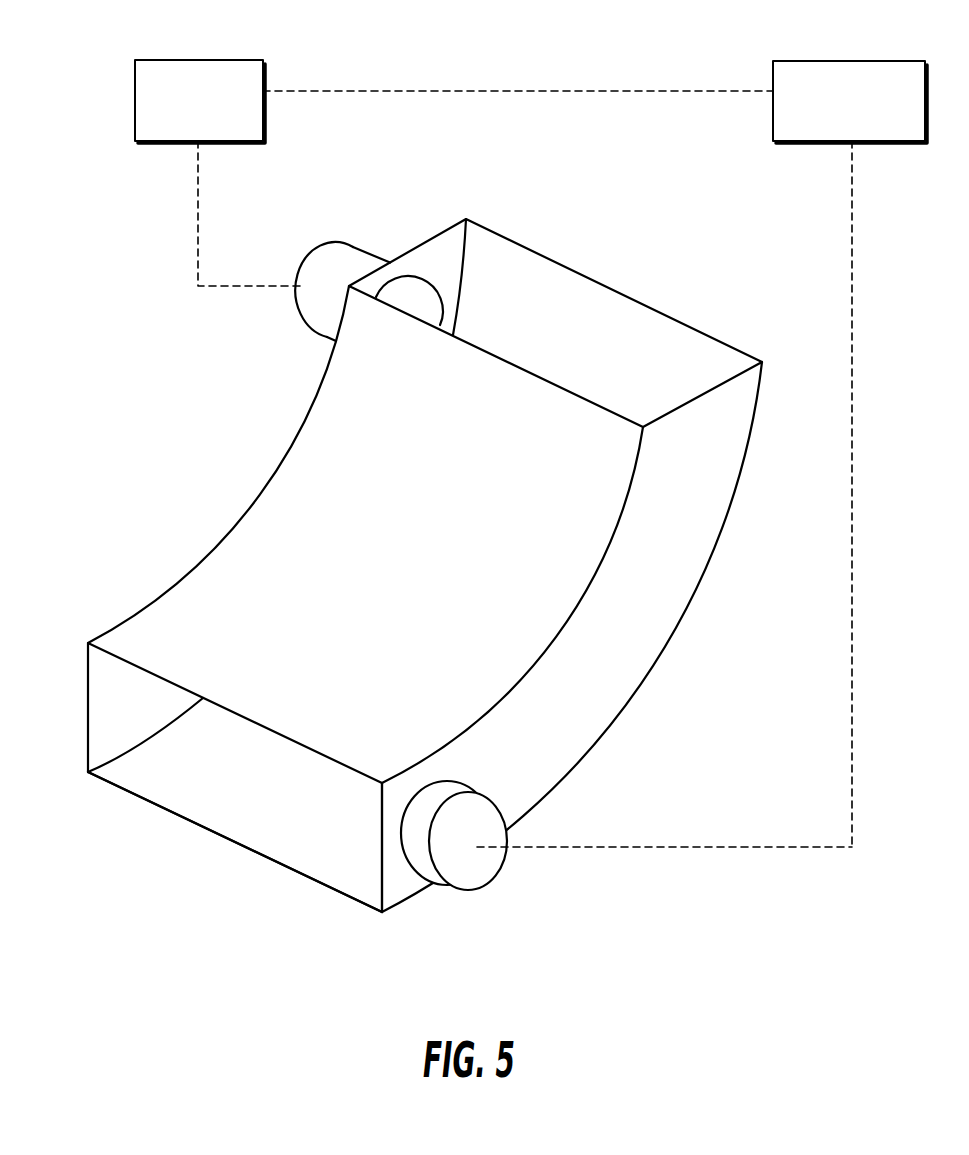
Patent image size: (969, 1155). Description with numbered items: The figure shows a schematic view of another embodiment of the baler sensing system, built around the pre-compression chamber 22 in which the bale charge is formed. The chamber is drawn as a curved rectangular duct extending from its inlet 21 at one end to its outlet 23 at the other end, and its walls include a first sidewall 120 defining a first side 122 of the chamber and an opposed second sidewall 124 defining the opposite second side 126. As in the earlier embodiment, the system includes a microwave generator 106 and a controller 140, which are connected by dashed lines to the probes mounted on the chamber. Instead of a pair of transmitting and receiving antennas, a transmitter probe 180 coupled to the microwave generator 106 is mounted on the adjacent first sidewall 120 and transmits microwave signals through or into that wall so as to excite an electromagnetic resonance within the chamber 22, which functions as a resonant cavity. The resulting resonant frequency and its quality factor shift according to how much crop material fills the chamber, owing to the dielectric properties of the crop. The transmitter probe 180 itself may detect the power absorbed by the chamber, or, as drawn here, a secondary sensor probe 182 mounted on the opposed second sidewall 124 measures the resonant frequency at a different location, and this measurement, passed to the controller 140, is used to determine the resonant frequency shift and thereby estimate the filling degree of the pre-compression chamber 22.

The microwave generator 106 is at (135, 105).
The controller 140 is at (852, 61).
The transmitter probe 180 is at (331, 252).
The secondary sensor probe 182 is at (462, 788).
The outlet 23 is at (605, 285).
The inlet 21 is at (152, 802).
The pre-compression chamber 22 is at (200, 609).
The first sidewall 120 is at (95, 737).
The first side 122 is at (186, 570).
The second sidewall 124 is at (390, 885).
The second side 126 is at (383, 823).